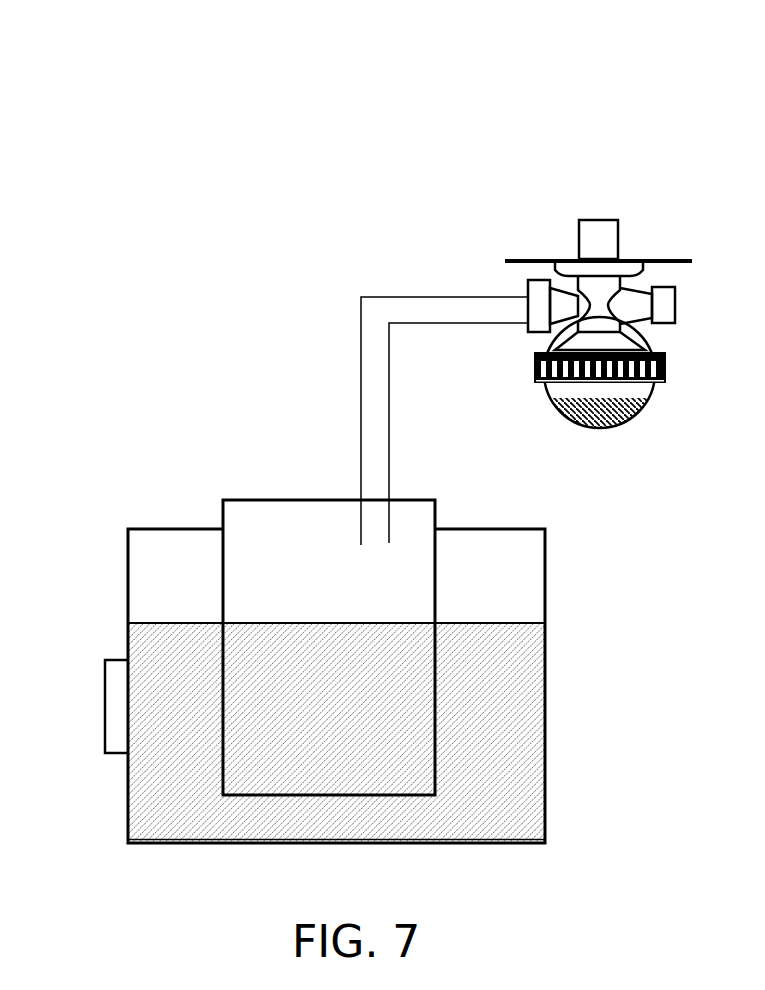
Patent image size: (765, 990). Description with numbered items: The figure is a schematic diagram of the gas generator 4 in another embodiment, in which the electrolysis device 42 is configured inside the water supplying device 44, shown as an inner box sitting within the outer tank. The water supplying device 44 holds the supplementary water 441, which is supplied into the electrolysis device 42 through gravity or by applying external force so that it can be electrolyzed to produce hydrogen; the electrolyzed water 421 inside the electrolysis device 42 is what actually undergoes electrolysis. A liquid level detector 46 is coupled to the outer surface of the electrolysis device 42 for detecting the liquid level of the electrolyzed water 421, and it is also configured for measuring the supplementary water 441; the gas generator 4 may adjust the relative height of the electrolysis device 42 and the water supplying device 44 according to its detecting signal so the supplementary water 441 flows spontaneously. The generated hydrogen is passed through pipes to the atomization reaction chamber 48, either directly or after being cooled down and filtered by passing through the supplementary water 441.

The gas generator 4 is at (340, 118).
The electrolysis device 42 is at (258, 500).
The electrolyzed water 421 is at (262, 640).
The water supplying device 44 is at (545, 563).
The supplementary water 441 is at (481, 835).
The liquid level detector 46 is at (104, 690).
The atomization reaction chamber 48 is at (618, 233).